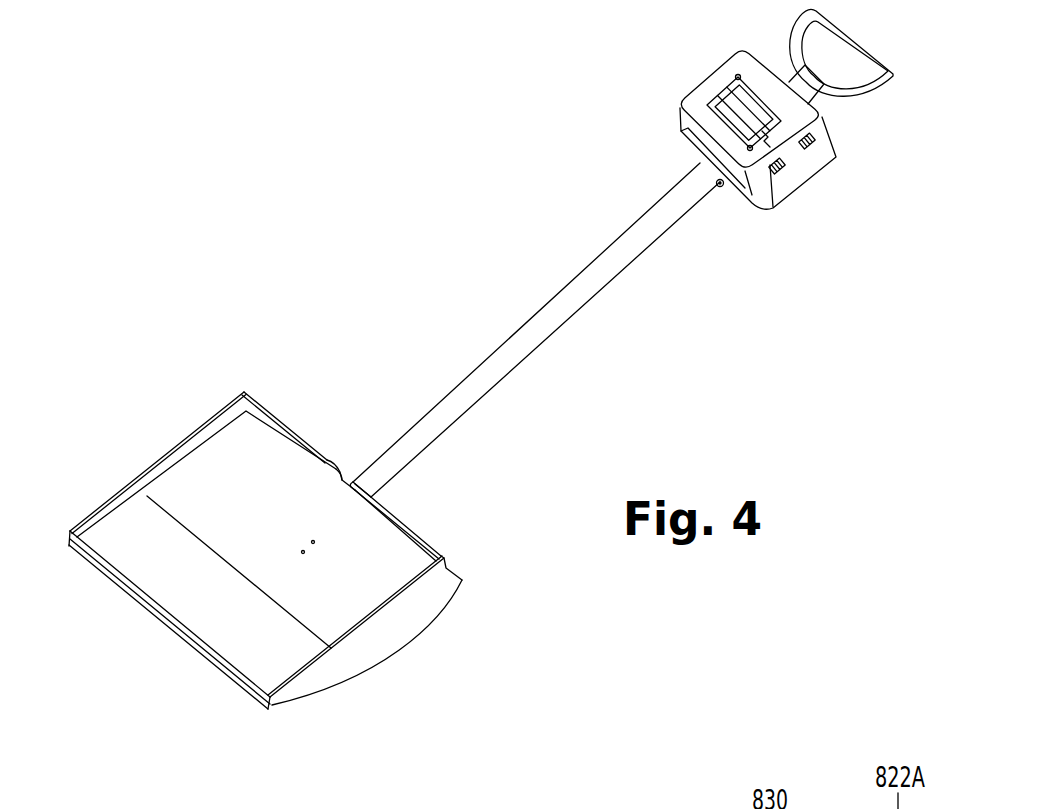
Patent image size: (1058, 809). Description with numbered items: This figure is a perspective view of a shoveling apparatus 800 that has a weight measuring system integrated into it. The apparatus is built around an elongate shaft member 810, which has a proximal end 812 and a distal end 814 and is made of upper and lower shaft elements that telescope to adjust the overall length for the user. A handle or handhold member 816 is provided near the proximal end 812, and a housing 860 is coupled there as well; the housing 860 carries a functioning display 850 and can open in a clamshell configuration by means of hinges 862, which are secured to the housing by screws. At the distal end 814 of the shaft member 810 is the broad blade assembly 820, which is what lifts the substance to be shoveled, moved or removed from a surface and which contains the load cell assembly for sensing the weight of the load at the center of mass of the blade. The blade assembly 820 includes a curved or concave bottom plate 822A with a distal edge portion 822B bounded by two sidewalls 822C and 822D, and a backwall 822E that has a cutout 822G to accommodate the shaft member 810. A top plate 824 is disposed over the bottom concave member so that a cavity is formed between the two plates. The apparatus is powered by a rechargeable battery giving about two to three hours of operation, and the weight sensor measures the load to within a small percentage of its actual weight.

The shoveling apparatus 800 is at (347, 91).
The elongate shaft member 810 is at (514, 350).
The proximal end 812 is at (717, 200).
The distal end 814 is at (392, 492).
The handle or handhold member 816 is at (874, 89).
The broad blade assembly 820 is at (66, 510).
The curved or concave bottom plate 822A is at (458, 541).
The distal edge portion 822B is at (270, 707).
The sidewall 822C is at (168, 468).
The sidewall 822D is at (353, 660).
The backwall 822E is at (245, 391).
The cutout 822G is at (330, 465).
The top plate 824 is at (365, 585).
The display 850 is at (714, 102).
The housing 860 is at (732, 54).
The hinges 862 is at (784, 173).